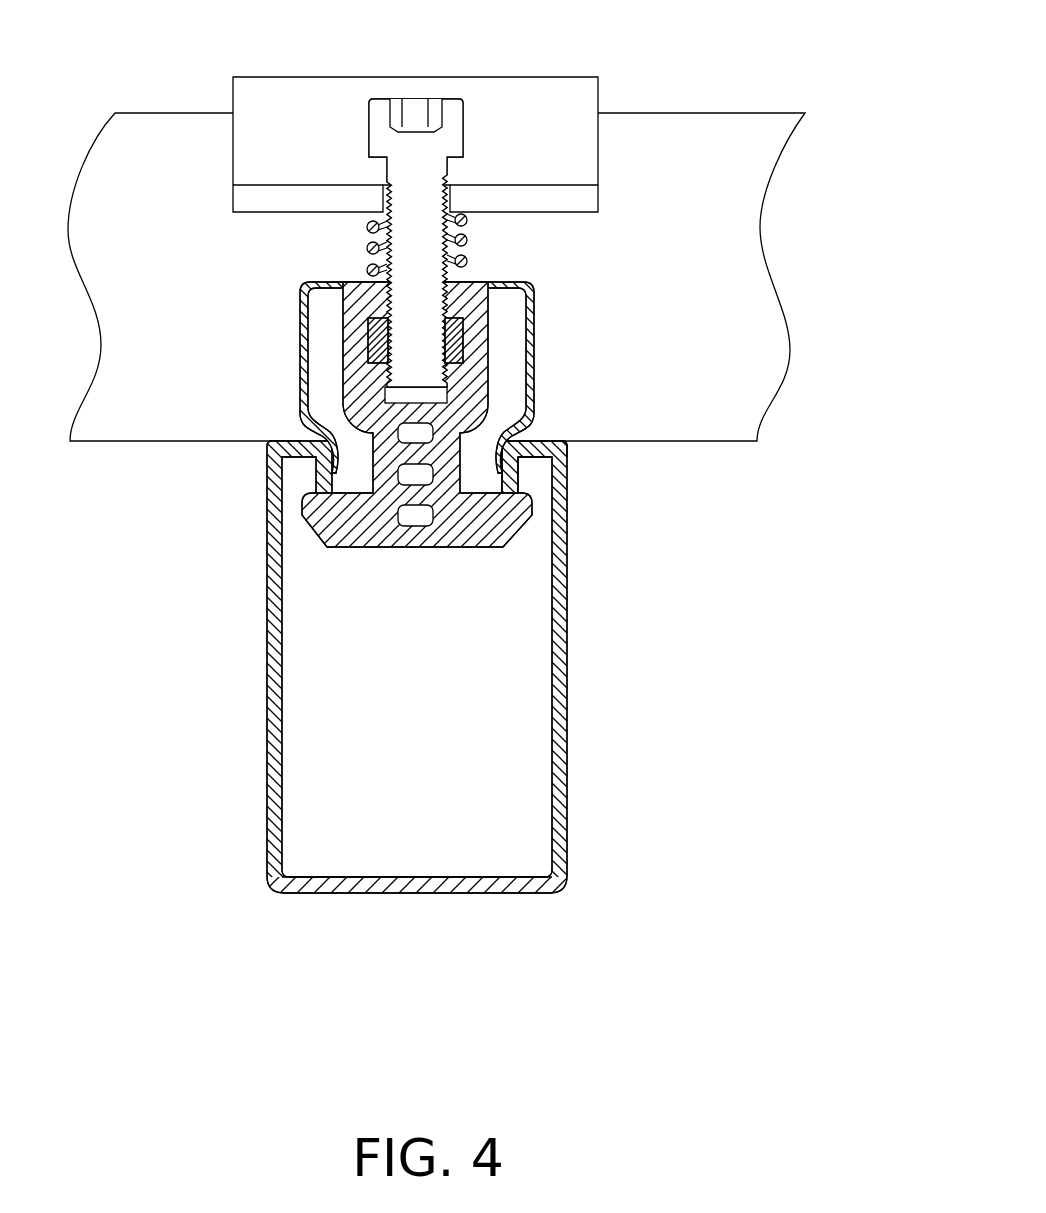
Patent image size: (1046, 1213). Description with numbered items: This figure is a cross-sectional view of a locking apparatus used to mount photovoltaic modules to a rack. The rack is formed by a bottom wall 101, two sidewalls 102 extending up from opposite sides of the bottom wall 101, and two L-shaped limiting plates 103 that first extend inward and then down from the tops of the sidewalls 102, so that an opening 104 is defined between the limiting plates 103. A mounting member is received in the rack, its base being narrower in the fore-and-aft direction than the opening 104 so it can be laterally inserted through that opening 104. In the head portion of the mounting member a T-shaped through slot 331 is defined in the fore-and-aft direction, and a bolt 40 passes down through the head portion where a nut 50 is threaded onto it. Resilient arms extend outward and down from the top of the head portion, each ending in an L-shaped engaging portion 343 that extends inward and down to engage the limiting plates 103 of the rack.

The bolt 40 is at (369, 124).
The nut 50 is at (371, 342).
The through slot 331 is at (393, 393).
The engaging portion 343 is at (505, 480).
The limiting plate 103 is at (507, 458).
The opening 104 is at (477, 478).
The sidewall 102 is at (569, 621).
The bottom wall 101 is at (395, 884).